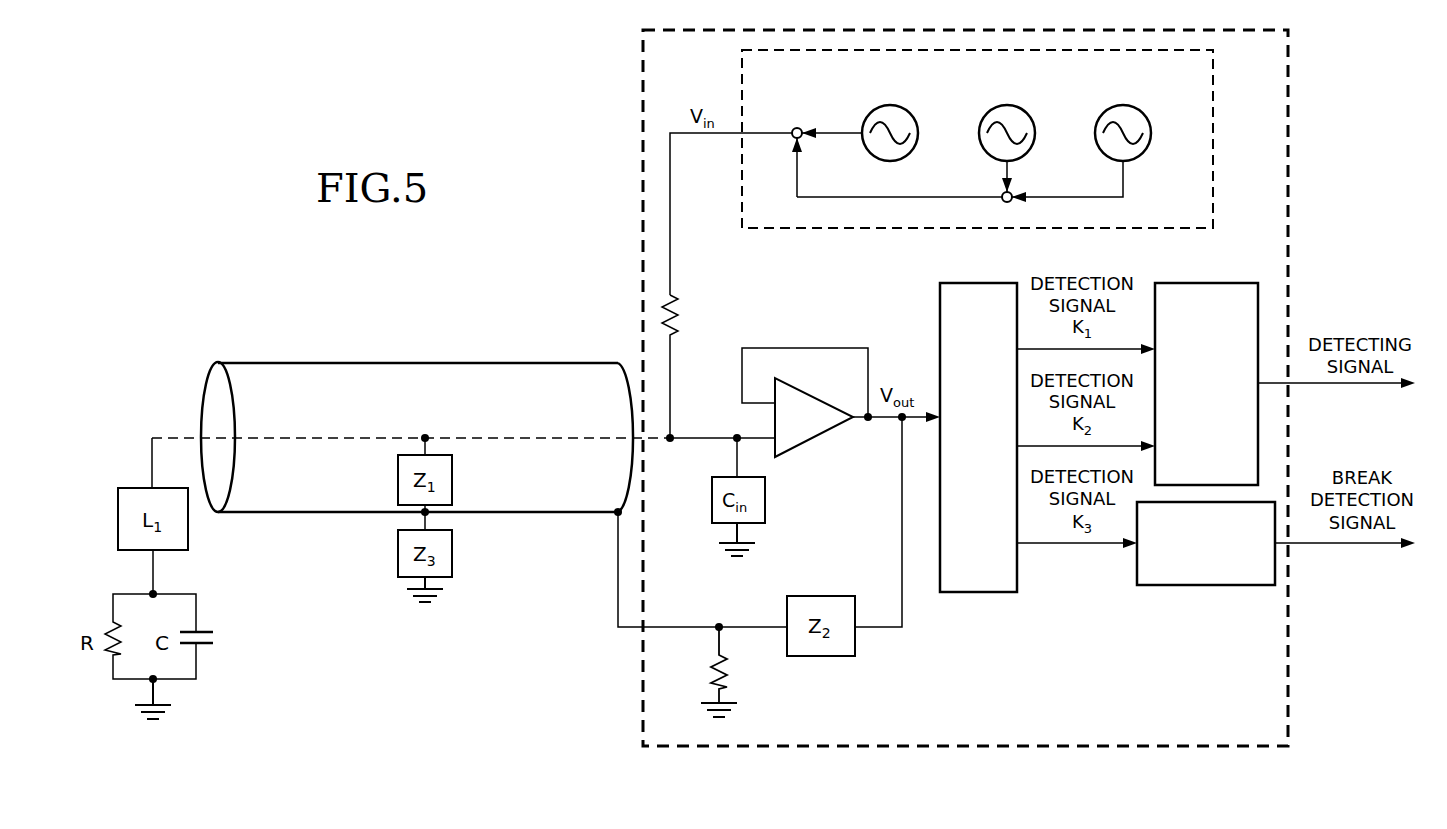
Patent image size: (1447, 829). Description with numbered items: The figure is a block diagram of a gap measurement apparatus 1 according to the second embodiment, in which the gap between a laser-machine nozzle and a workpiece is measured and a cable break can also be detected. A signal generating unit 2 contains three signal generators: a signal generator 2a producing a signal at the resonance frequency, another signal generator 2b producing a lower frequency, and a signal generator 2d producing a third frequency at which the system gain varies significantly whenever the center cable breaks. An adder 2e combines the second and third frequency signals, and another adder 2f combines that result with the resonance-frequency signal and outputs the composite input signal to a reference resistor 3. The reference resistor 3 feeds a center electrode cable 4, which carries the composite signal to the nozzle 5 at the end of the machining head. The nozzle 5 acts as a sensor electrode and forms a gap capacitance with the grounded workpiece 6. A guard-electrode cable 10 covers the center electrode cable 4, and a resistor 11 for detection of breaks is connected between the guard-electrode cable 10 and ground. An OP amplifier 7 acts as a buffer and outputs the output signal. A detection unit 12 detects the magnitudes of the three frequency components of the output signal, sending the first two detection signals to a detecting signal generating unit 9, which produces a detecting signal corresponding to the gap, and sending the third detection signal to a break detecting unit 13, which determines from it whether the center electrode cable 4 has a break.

The gap measurement apparatus 1 is at (1000, 748).
The signal generating unit 2 is at (742, 64).
The signal generator 2a is at (918, 134).
The signal generator 2b is at (1035, 134).
The signal generator 2d is at (1151, 134).
The adder 2e is at (1014, 190).
The adder 2f is at (791, 140).
The reference resistor 3 is at (680, 318).
The center electrode cable 4 is at (165, 438).
The nozzle 5 is at (210, 630).
The workpiece 6 is at (210, 646).
The OP amplifier 7 is at (813, 400).
The detecting signal generating unit 9 is at (1207, 288).
The guard-electrode cable 10 is at (322, 512).
The resistor for detection of breaks 11 is at (708, 670).
The detection unit 12 is at (985, 288).
The break detecting unit 13 is at (1200, 586).